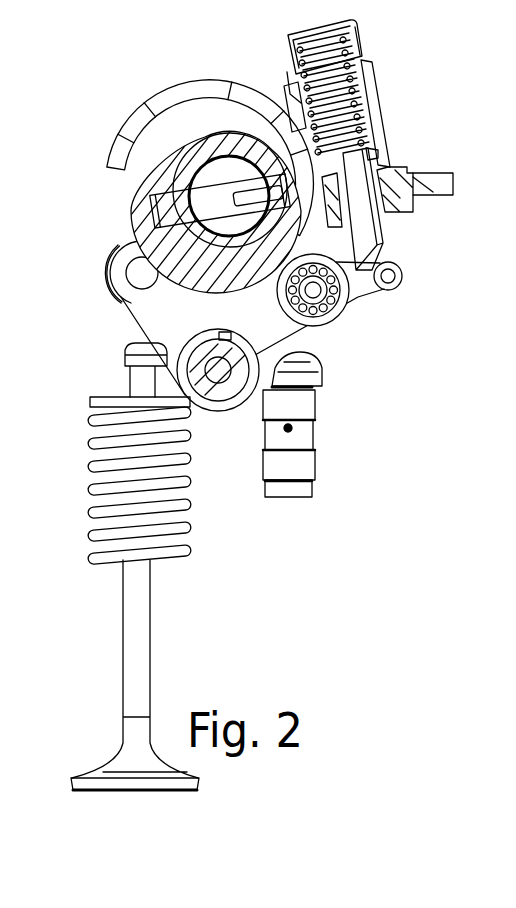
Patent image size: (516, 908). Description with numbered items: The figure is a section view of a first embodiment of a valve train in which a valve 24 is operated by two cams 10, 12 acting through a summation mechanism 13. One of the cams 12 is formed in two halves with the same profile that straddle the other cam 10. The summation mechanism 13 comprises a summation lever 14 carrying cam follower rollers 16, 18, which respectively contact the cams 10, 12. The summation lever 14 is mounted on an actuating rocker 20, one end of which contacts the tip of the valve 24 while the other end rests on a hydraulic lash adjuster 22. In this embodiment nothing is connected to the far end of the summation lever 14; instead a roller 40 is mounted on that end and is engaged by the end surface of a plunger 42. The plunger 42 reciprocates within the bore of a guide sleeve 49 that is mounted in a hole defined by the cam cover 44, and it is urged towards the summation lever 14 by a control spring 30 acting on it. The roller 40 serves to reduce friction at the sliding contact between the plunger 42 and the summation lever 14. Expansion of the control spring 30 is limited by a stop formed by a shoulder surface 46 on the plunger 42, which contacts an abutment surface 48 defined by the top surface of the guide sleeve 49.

The cam 10 is at (137, 215).
The cam 12 is at (200, 121).
The summation mechanism 13 is at (97, 313).
The summation lever 14 is at (360, 295).
The cam follower roller 16 is at (333, 310).
The cam follower roller 18 is at (113, 253).
The actuating rocker 20 is at (123, 357).
The hydraulic lash adjuster 22 is at (303, 433).
The valve 24 is at (123, 643).
The control spring 30 is at (330, 67).
The roller 40 is at (400, 276).
The plunger 42 is at (383, 237).
The cam cover 44 is at (387, 97).
The shoulder surface 46 is at (380, 153).
The abutment surface 48 is at (390, 163).
The guide sleeve 49 is at (453, 188).